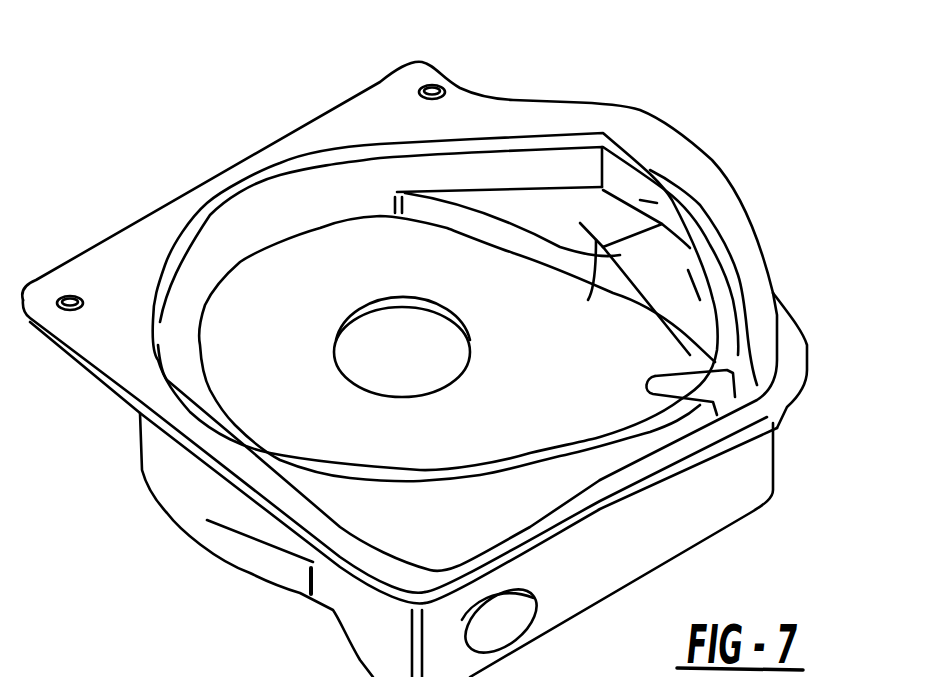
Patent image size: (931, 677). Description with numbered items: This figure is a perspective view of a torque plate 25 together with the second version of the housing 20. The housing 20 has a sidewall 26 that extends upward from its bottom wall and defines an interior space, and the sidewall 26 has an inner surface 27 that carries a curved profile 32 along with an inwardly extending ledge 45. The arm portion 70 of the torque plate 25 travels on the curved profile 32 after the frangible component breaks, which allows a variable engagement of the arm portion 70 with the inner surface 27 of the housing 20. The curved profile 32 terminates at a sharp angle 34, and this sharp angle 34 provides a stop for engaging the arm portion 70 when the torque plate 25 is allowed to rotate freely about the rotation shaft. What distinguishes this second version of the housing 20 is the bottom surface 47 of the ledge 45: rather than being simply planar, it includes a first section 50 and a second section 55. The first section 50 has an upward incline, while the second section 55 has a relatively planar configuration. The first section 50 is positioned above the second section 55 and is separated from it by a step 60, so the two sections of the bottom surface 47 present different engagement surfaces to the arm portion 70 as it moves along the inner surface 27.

The housing 20 is at (685, 138).
The torque plate 25 is at (333, 255).
The sidewall 26 is at (167, 468).
The inner surface 27 is at (240, 228).
The curved profile 32 is at (688, 270).
The sharp angle 34 is at (613, 207).
The inwardly extending ledge 45 is at (470, 222).
The bottom surface 47 is at (616, 218).
The first section 50 is at (657, 203).
The second section 55 is at (577, 225).
The step 60 is at (588, 300).
The arm portion 70 is at (687, 353).